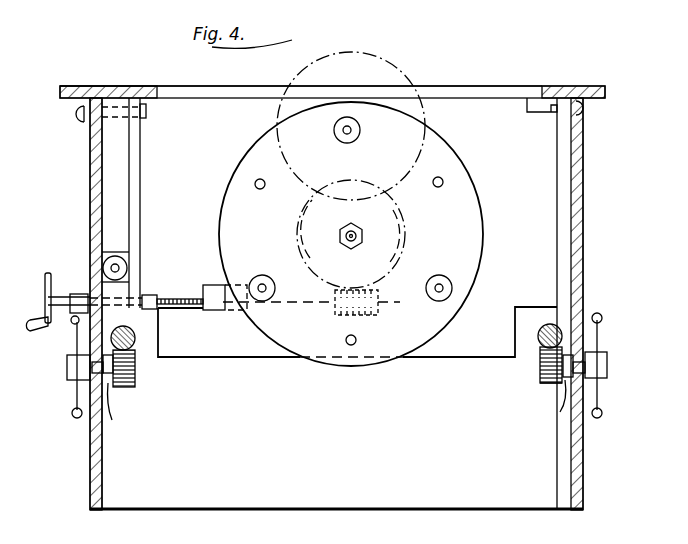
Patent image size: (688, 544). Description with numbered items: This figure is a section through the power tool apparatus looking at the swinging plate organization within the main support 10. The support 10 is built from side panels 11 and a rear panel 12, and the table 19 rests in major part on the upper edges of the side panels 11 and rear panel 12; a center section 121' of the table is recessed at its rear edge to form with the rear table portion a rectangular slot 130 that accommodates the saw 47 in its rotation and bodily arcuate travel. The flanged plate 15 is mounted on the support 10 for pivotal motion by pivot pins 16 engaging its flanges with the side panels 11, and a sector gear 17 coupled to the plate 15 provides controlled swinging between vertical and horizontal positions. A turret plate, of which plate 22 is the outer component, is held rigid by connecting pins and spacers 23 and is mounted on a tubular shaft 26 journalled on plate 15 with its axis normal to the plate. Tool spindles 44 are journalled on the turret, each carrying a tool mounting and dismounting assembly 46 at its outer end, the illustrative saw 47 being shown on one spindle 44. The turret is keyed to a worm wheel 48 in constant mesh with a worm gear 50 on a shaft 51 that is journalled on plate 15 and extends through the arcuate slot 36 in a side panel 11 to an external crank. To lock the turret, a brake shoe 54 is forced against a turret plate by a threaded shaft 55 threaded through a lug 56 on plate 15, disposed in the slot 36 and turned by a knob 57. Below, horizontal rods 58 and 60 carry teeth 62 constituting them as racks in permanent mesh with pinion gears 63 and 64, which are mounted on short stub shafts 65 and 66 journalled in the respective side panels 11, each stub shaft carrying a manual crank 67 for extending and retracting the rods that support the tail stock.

The main support 10 is at (628, 222).
The side panel 11 is at (95, 180).
The rear panel 12 is at (336, 463).
The flanged plate 15 is at (535, 271).
The pivot pin 16 is at (82, 118).
The sector gear 17 is at (108, 148).
The table 19 is at (530, 86).
The turret plate component 22 is at (480, 207).
The connecting pins and spacers 23 is at (255, 184).
The tubular shaft 26 is at (339, 237).
The arcuate slot 36 is at (115, 280).
The tool spindle 44 is at (342, 129).
The tool mounting and dismounting assembly 46 is at (361, 131).
The saw 47 is at (370, 57).
The worm wheel 48 is at (406, 234).
The worm gear 50 is at (321, 302).
The shaft 51 is at (48, 272).
The brake shoe 54 is at (222, 311).
The threaded shaft 55 is at (173, 299).
The lug 56 is at (150, 295).
The knob 57 is at (75, 294).
The horizontal rod 58 is at (134, 336).
The horizontal rod 60 is at (541, 340).
The teeth 62 is at (136, 356).
The pinion gear 63 is at (128, 388).
The pinion gear 64 is at (552, 385).
The stub shaft 65 is at (113, 421).
The stub shaft 66 is at (563, 407).
The manual crank 67 is at (67, 393).
The center section 121' is at (128, 73).
The rectangular slot 130 is at (250, 96).